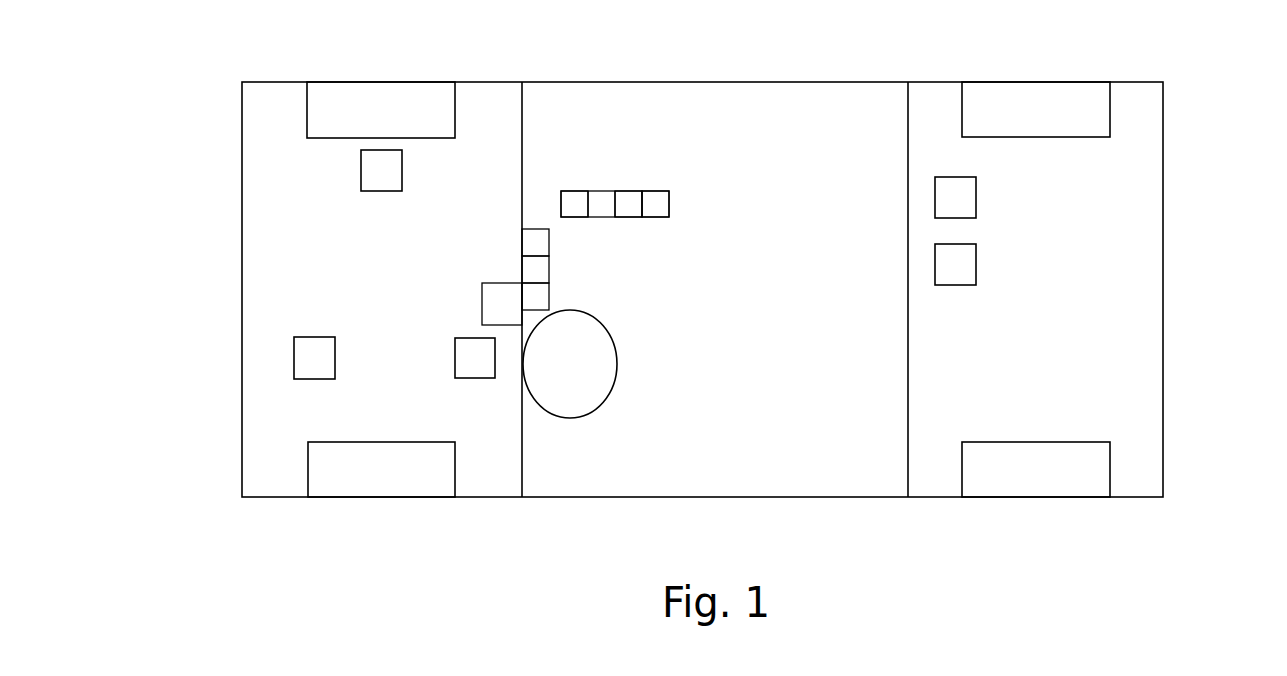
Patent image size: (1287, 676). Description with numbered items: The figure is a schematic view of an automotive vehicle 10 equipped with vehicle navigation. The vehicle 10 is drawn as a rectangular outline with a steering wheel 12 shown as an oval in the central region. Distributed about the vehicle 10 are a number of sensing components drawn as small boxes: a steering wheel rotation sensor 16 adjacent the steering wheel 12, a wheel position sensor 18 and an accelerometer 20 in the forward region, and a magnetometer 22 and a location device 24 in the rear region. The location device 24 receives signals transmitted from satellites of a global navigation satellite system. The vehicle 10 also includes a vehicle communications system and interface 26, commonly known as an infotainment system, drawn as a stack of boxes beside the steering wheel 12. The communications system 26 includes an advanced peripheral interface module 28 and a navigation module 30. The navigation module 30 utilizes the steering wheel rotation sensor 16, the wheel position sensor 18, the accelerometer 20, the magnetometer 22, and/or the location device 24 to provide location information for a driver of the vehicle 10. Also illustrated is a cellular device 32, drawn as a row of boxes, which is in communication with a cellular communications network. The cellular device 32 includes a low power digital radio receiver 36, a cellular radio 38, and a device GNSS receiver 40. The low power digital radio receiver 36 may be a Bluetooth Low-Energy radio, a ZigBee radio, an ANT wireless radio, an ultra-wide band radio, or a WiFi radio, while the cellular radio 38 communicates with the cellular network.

The automotive vehicle 10 is at (205, 185).
The steering wheel 12 is at (565, 418).
The steering wheel rotation sensor 16 is at (475, 378).
The wheel position sensor 18 is at (361, 172).
The accelerometer 20 is at (294, 357).
The magnetometer 22 is at (976, 265).
The location device 24 is at (976, 198).
The vehicle communications system and interface 26 is at (588, 297).
The advanced peripheral interface module 28 is at (549, 243).
The navigation module 30 is at (549, 268).
The cellular device 32 is at (707, 204).
The low power digital radio receiver 36 is at (603, 191).
The cellular radio 38 is at (630, 191).
The device GNSS receiver 40 is at (654, 191).